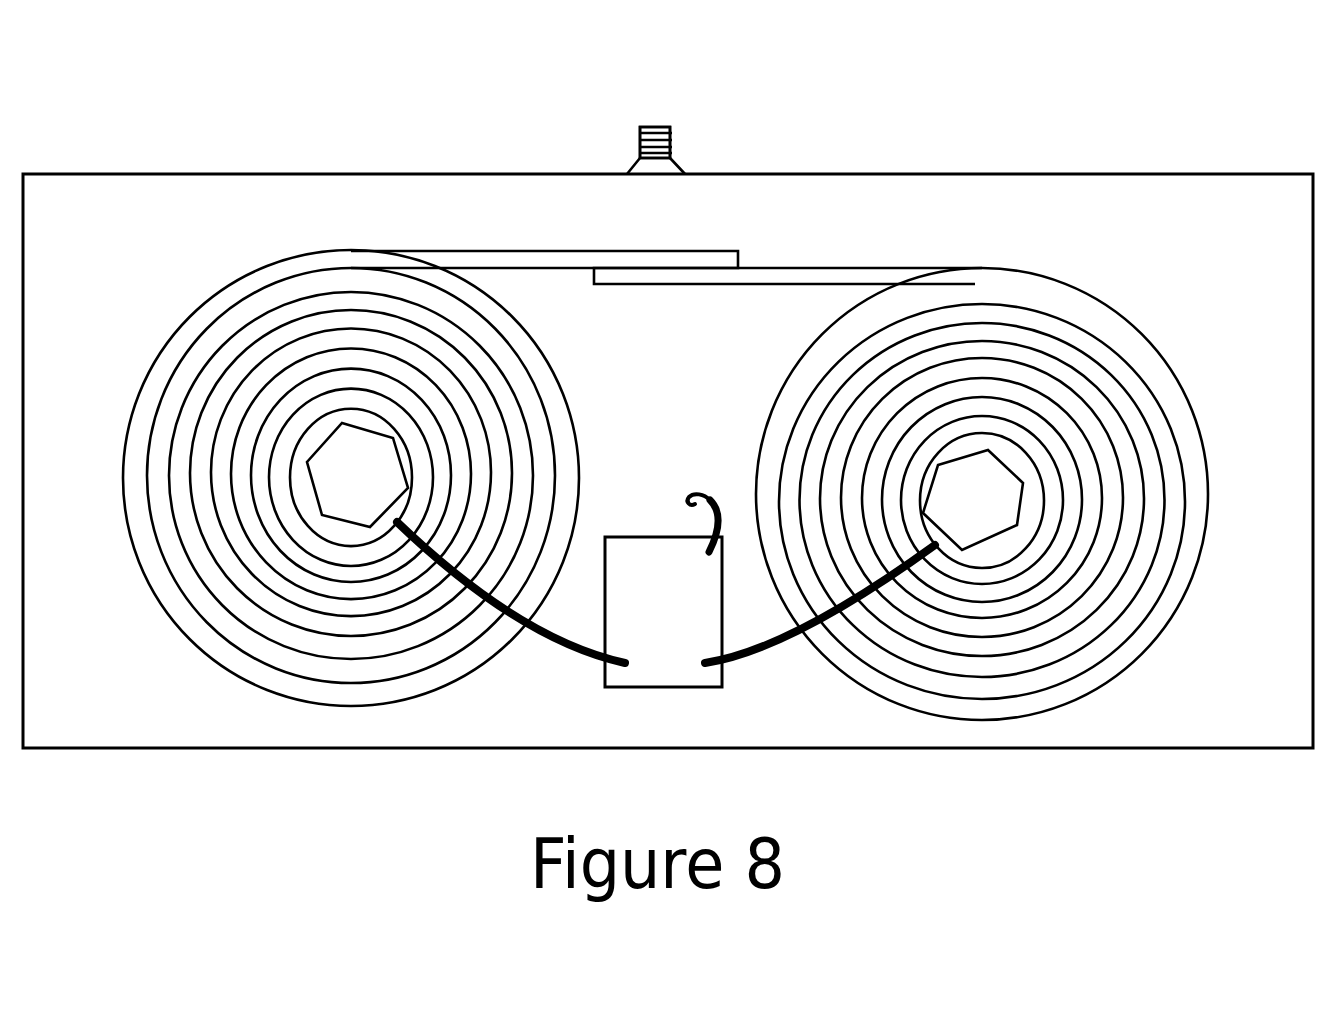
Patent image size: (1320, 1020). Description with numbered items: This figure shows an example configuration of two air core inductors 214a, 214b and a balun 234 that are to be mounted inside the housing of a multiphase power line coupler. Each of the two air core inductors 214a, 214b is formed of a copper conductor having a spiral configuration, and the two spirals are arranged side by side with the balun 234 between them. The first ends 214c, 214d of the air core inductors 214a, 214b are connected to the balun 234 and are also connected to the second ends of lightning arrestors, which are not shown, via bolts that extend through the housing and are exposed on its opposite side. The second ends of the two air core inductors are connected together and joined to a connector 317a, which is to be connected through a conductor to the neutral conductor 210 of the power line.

The air core inductor 214a is at (212, 297).
The air core inductor 214b is at (1128, 314).
The first end of air core inductor 214c is at (320, 494).
The first end of air core inductor 214d is at (1020, 540).
The balun 234 is at (633, 537).
The connector 317a is at (715, 137).
The neutral conductor 210 is at (850, 129).